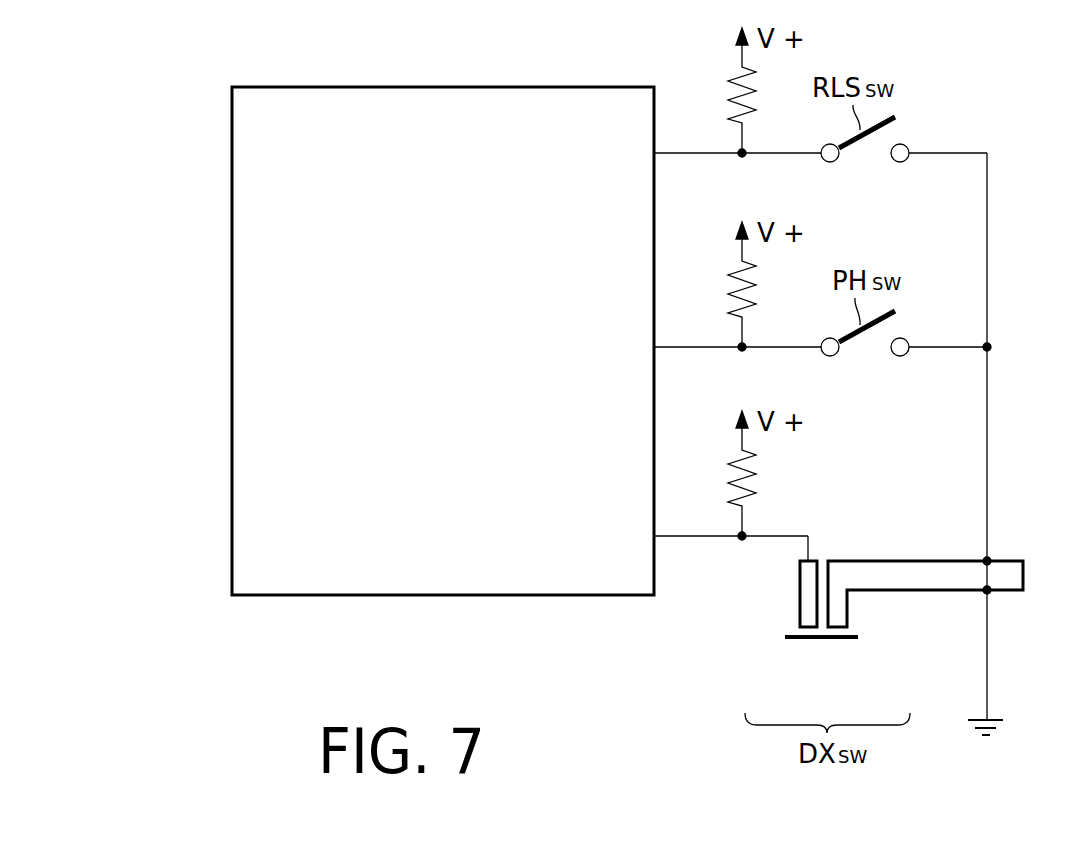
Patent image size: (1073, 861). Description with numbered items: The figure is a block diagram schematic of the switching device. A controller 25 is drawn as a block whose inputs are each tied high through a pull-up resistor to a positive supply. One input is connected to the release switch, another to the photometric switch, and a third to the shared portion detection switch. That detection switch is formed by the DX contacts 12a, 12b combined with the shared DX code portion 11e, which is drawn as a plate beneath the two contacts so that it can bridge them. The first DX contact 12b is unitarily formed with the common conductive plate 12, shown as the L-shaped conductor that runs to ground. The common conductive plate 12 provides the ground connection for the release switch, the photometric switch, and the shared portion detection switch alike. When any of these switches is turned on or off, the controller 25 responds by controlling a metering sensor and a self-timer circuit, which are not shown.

The controller 25 is at (558, 84).
The common conductive plate 12 is at (882, 566).
The second DX contact 12a is at (800, 613).
The first DX contact 12b is at (838, 612).
The shared DX code portion 11e is at (800, 641).